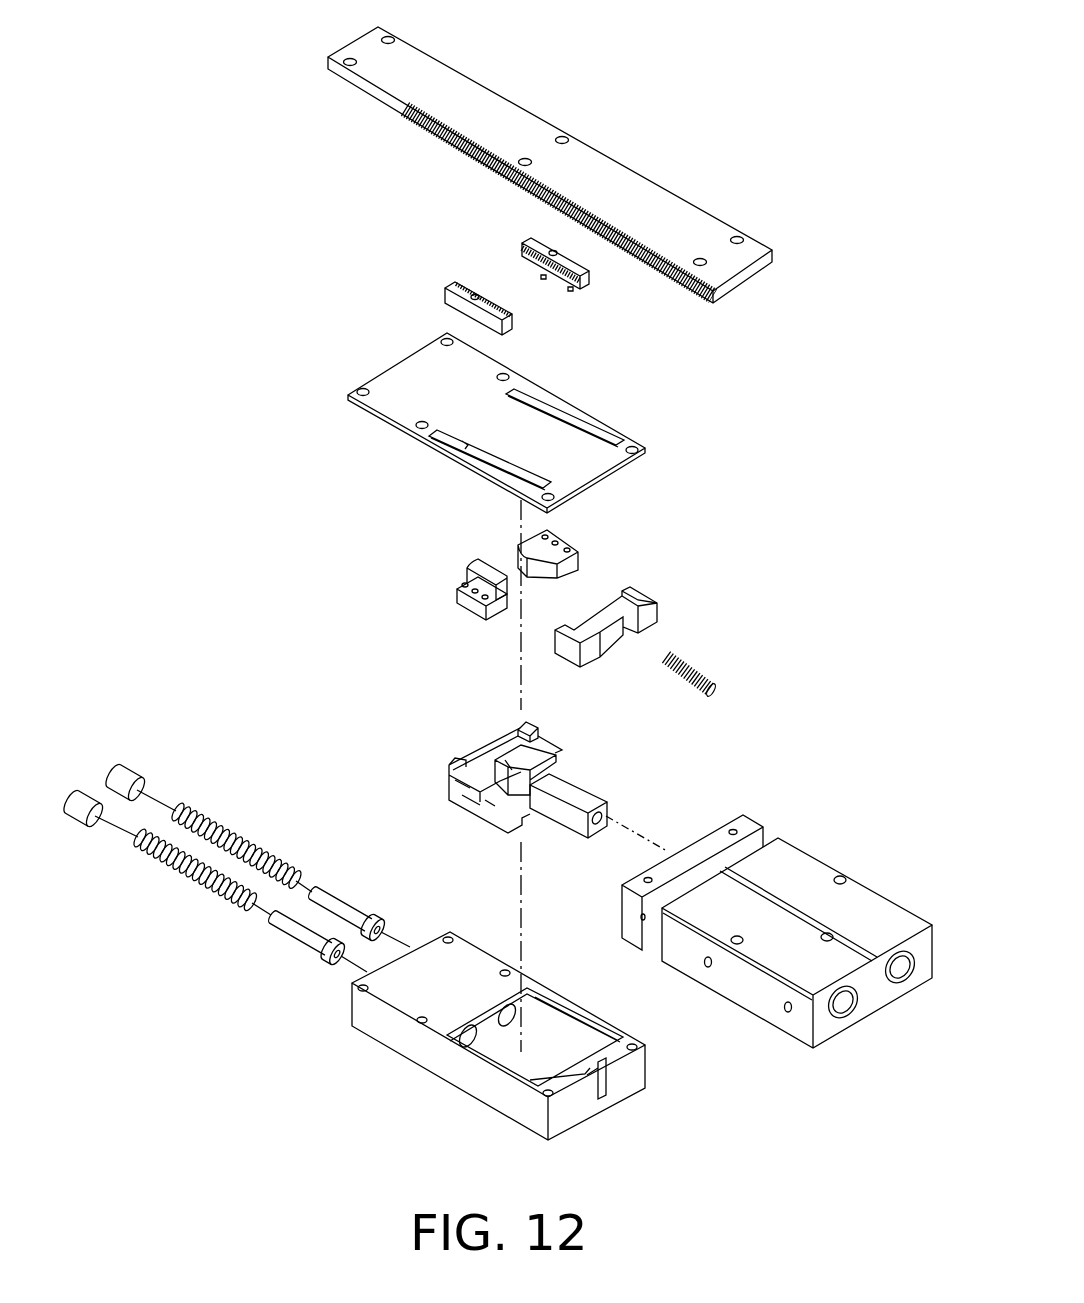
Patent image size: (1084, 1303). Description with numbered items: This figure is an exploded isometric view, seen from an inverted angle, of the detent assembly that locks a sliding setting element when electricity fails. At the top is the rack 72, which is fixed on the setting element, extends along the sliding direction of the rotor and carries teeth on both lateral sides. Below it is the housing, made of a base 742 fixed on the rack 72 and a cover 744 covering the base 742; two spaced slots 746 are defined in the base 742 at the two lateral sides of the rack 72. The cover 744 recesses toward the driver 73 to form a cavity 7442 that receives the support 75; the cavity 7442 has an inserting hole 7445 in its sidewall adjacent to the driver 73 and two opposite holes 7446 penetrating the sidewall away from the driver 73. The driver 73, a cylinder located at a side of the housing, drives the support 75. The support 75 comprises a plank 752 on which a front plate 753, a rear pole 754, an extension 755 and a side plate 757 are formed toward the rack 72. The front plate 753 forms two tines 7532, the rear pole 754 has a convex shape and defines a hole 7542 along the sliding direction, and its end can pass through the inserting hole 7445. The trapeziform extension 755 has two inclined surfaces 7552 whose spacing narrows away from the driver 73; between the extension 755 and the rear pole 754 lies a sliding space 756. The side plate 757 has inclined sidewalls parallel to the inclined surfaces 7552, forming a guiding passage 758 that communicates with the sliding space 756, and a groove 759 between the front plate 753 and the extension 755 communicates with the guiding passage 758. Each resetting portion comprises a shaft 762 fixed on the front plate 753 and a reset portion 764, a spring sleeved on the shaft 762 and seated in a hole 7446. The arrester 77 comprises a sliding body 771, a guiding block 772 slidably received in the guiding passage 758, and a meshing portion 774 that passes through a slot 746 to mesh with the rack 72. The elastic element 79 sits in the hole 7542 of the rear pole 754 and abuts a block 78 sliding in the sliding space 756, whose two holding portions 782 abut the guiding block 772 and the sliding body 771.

The rack 72 is at (625, 185).
The meshing portion 774 is at (533, 240).
The base 742 is at (506, 422).
The slots 746 is at (563, 417).
The arrester 77 is at (373, 528).
The sliding body 771 is at (485, 575).
The guiding block 772 is at (485, 613).
The block 78 is at (653, 611).
The holding portions 782 is at (630, 590).
The elastic element 79 is at (709, 673).
The support 75 is at (616, 787).
The plank 752 is at (535, 823).
The front plate 753 is at (467, 760).
The tines 7532 is at (527, 722).
The rear pole 754 is at (617, 787).
The hole 7542 is at (602, 813).
The extension 755 is at (507, 748).
The inclined surfaces 7552 is at (495, 780).
The sliding space 756 is at (493, 797).
The side plate 757 is at (465, 798).
The guiding passage 758 is at (472, 790).
The groove 759 is at (509, 766).
The reset portion 764 is at (163, 873).
The shaft 762 is at (282, 923).
The cover 744 is at (541, 1047).
The cavity 7442 is at (550, 1053).
The holes 7446 is at (478, 1042).
The inserting hole 7445 is at (597, 1102).
The driver 73 is at (798, 868).